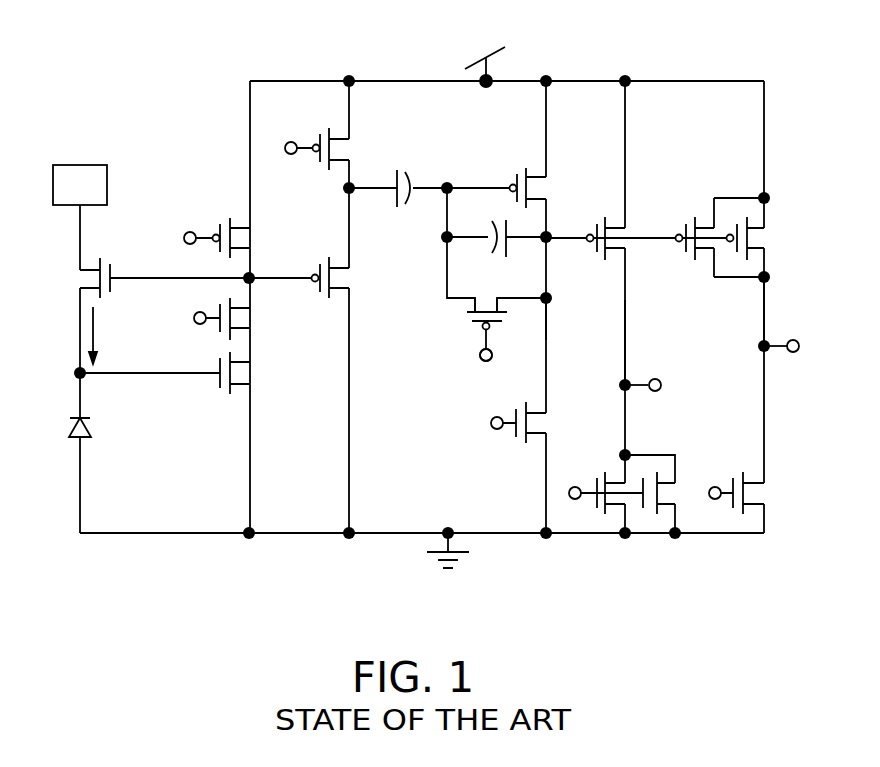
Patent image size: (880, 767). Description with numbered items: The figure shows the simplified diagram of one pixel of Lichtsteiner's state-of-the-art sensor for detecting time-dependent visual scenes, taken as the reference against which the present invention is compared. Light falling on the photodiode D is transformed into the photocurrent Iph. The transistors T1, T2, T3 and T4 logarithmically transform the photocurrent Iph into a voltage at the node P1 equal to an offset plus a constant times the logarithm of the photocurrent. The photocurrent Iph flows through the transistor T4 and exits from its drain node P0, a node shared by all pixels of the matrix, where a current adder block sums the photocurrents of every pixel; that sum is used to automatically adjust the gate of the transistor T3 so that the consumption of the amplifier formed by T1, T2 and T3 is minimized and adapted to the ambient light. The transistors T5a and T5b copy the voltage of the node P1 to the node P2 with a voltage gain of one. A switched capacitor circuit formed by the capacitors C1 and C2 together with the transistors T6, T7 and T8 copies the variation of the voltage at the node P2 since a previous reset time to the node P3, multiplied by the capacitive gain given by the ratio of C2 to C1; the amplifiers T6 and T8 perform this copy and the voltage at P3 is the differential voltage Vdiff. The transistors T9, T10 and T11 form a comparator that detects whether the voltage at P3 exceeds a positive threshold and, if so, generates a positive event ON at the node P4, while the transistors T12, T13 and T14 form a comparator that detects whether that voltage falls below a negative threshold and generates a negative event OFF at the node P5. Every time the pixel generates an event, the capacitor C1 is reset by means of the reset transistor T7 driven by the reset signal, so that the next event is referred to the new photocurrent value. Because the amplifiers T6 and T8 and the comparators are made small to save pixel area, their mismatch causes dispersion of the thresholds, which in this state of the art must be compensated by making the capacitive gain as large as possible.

The drain node P0 is at (67, 270).
The transistor T4 is at (164, 264).
The photocurrent Iph is at (110, 335).
The photodiode D is at (94, 428).
The transistor T3 is at (234, 238).
The node P1 is at (280, 264).
The transistor T2 is at (239, 319).
The transistor T1 is at (182, 373).
The transistor T5b is at (317, 135).
The transistor T5a is at (320, 292).
The node P2 is at (373, 205).
The capacitor C2 is at (406, 172).
The capacitor C1 is at (484, 253).
The amplifier transistor T6 is at (496, 174).
The reset transistor T7 is at (469, 329).
The element reset is at (484, 371).
The node P3 is at (566, 258).
The differential voltage Vdiff is at (574, 320).
The transistor T9 is at (628, 222).
The transistor T13 is at (696, 224).
The transistor T12 is at (771, 238).
The node P4 is at (642, 342).
The node P5 is at (744, 311).
The negative event OFF is at (795, 332).
The positive event ON is at (648, 372).
The amplifier transistor T8 is at (511, 435).
The transistor T11 is at (606, 478).
The transistor T10 is at (666, 468).
The transistor T14 is at (736, 478).